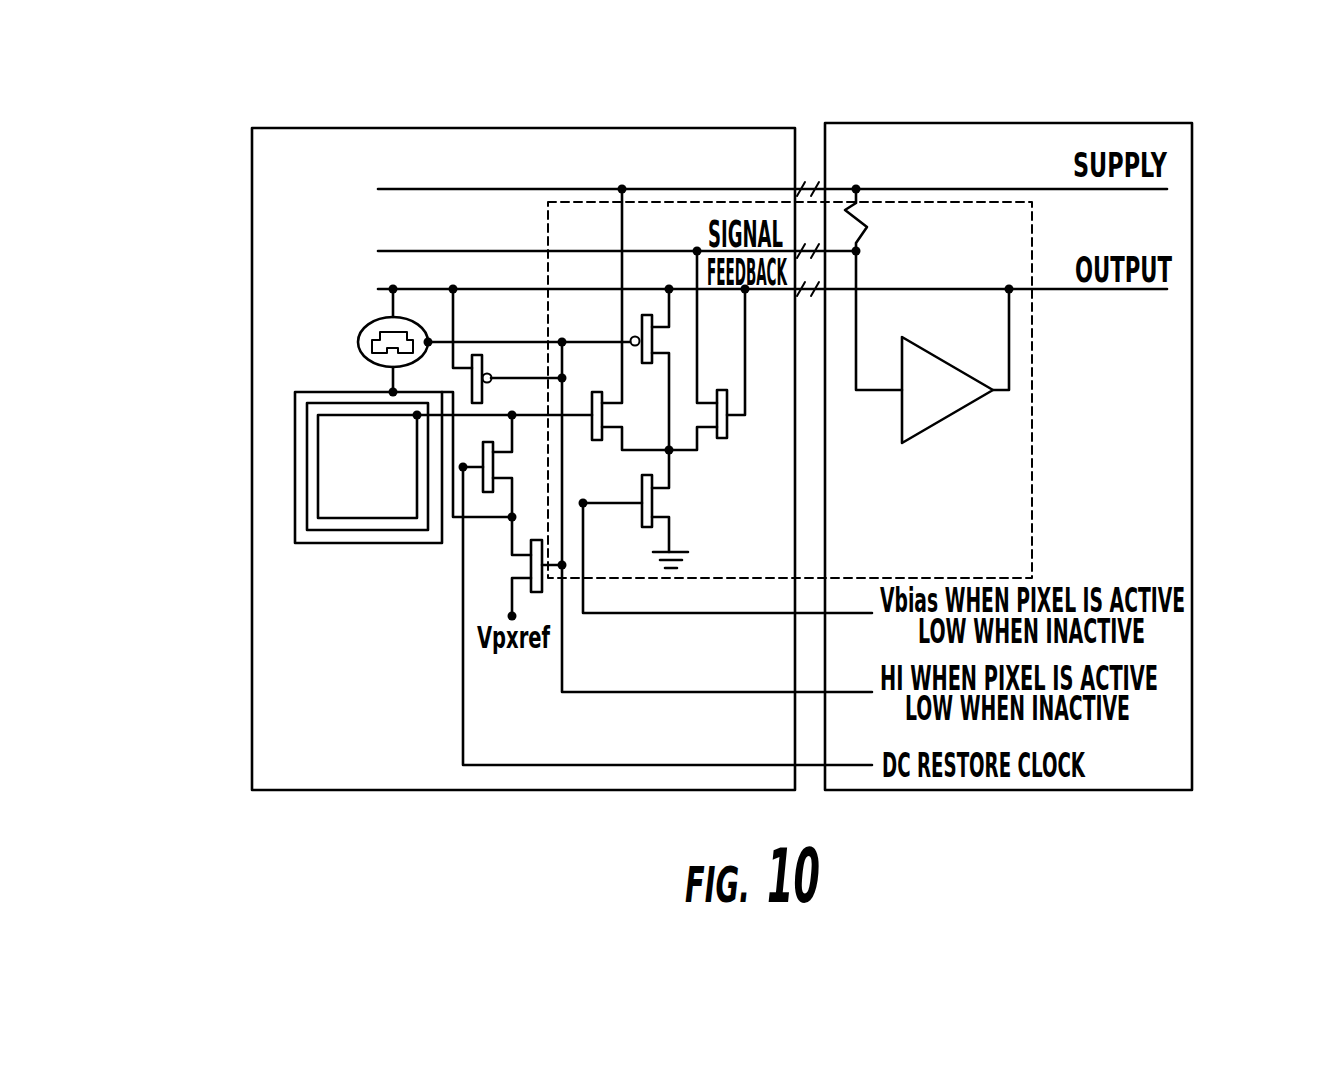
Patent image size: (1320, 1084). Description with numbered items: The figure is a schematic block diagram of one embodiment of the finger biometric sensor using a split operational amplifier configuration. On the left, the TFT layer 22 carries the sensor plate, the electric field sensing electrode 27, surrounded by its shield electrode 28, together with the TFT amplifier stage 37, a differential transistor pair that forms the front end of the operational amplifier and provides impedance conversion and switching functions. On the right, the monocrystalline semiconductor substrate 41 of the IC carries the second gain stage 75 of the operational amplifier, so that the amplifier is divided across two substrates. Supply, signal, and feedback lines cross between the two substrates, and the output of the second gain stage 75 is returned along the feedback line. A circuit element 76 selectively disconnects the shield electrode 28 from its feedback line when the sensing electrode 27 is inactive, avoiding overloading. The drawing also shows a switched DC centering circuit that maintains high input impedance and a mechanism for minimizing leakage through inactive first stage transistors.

The TFT layer 22 is at (248, 207).
The circuit element 76 is at (358, 342).
The shield electrode 28 is at (293, 428).
The electric field sensing electrode 27 is at (318, 498).
The monocrystalline semiconductor substrate 41 is at (1193, 207).
The second gain stage 75 is at (962, 412).
The TFT amplifier stage 37 is at (755, 443).